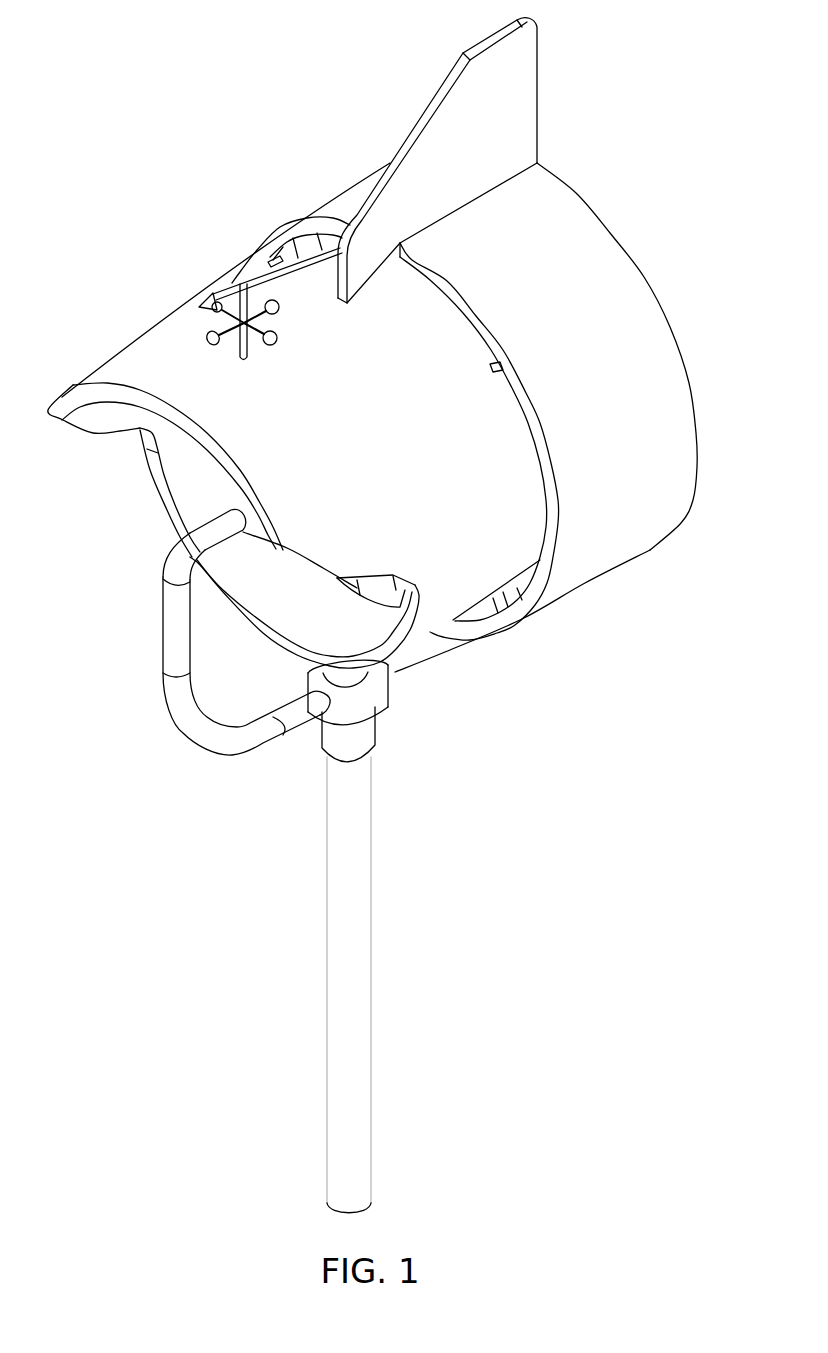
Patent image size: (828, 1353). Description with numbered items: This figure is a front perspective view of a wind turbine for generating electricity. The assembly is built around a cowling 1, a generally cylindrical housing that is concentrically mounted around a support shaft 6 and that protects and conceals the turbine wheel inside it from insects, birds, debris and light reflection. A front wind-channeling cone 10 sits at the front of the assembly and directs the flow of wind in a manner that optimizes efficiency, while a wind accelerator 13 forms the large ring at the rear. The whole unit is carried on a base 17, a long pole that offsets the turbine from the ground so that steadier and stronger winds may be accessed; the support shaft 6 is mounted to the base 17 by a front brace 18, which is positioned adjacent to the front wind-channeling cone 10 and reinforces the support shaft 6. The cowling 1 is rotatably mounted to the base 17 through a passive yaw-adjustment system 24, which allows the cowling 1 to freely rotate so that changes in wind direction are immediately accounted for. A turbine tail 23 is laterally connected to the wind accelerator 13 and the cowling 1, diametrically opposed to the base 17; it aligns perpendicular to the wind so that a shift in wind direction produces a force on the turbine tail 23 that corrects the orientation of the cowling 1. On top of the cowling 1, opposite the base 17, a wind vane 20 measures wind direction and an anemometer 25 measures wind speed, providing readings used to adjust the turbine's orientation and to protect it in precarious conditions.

The cowling 1 is at (148, 352).
The support shaft 6 is at (220, 541).
The front wind-channeling cone 10 is at (240, 502).
The wind accelerator 13 is at (643, 278).
The base 17 is at (371, 855).
The front brace 18 is at (175, 712).
The wind vane 20 is at (235, 288).
The turbine tail 23 is at (533, 123).
The passive yaw-adjustment system 24 is at (385, 693).
The anemometer 25 is at (272, 345).